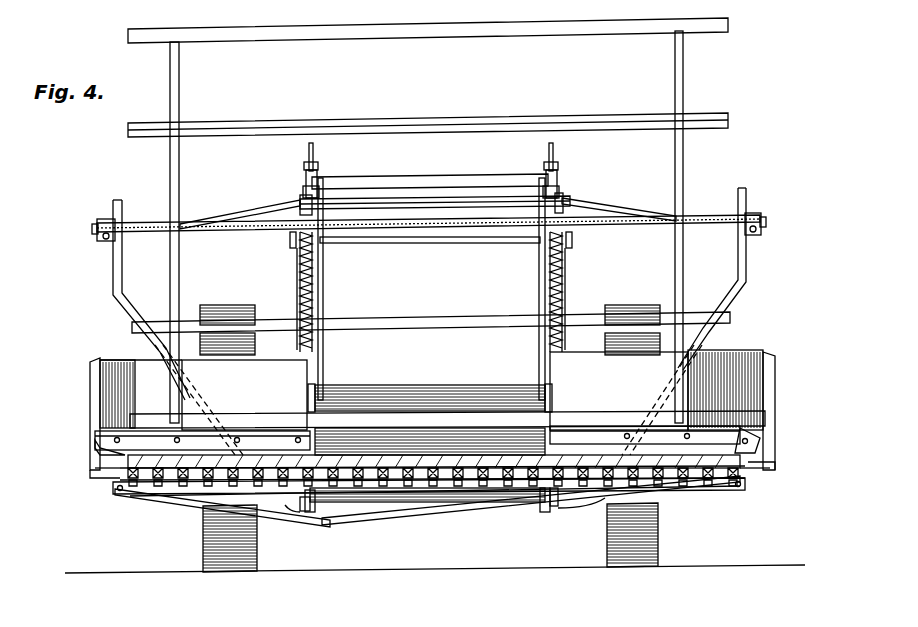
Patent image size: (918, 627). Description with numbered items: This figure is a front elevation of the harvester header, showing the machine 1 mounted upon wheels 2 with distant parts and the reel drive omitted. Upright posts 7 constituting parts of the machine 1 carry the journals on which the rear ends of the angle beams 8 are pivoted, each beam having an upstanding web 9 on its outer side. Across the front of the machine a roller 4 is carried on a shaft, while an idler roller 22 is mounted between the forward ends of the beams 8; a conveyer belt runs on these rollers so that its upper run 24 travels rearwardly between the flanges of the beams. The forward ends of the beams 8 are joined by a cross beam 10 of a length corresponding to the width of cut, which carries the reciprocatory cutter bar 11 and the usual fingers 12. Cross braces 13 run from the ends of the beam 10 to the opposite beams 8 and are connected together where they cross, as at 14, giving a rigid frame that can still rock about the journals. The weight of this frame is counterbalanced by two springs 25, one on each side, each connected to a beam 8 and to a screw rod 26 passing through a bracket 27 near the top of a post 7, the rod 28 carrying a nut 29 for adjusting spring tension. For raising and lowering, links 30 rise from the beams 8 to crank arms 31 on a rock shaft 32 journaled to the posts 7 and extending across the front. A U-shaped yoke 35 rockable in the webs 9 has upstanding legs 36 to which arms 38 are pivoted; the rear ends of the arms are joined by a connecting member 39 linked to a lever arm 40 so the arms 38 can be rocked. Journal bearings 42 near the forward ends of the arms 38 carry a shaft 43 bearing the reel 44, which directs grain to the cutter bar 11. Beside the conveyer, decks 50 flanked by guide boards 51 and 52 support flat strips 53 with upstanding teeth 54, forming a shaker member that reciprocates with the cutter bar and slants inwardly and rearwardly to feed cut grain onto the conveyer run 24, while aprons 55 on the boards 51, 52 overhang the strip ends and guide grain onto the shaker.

The machine 1 is at (421, 176).
The wheels 2 is at (226, 566).
The roller 4 is at (318, 385).
The posts 7 is at (324, 352).
The beams 8 is at (316, 514).
The web 9 is at (575, 512).
The beam 10 is at (140, 495).
The cutter bar 11 is at (492, 488).
The fingers 12 is at (182, 488).
The cross braces 13 is at (335, 522).
The connection of cross braces 14 is at (434, 503).
The roller 22 is at (552, 508).
The upper run of conveyer belt 24 is at (428, 396).
The spring 25 is at (313, 292).
The screw rod 26 is at (320, 190).
The bracket 27 is at (306, 175).
The rod 28 is at (308, 152).
The nut 29 is at (319, 168).
The link 30 is at (297, 281).
The crank arm 31 is at (291, 240).
The rock shaft 32 is at (440, 245).
The support or yoke 35 is at (304, 512).
The upstanding legs 36 is at (124, 208).
The arm 38 is at (238, 220).
The connecting member 39 is at (440, 200).
The lever arm 40 is at (300, 204).
The journal bearings 42 is at (100, 222).
The shaft 43 is at (220, 234).
The reel 44 is at (412, 124).
The decks 50 is at (100, 470).
The guide board 51 is at (92, 376).
The guide board 52 is at (738, 346).
The strips 53 is at (117, 484).
The teeth 54 is at (262, 466).
The aprons 55 is at (118, 445).